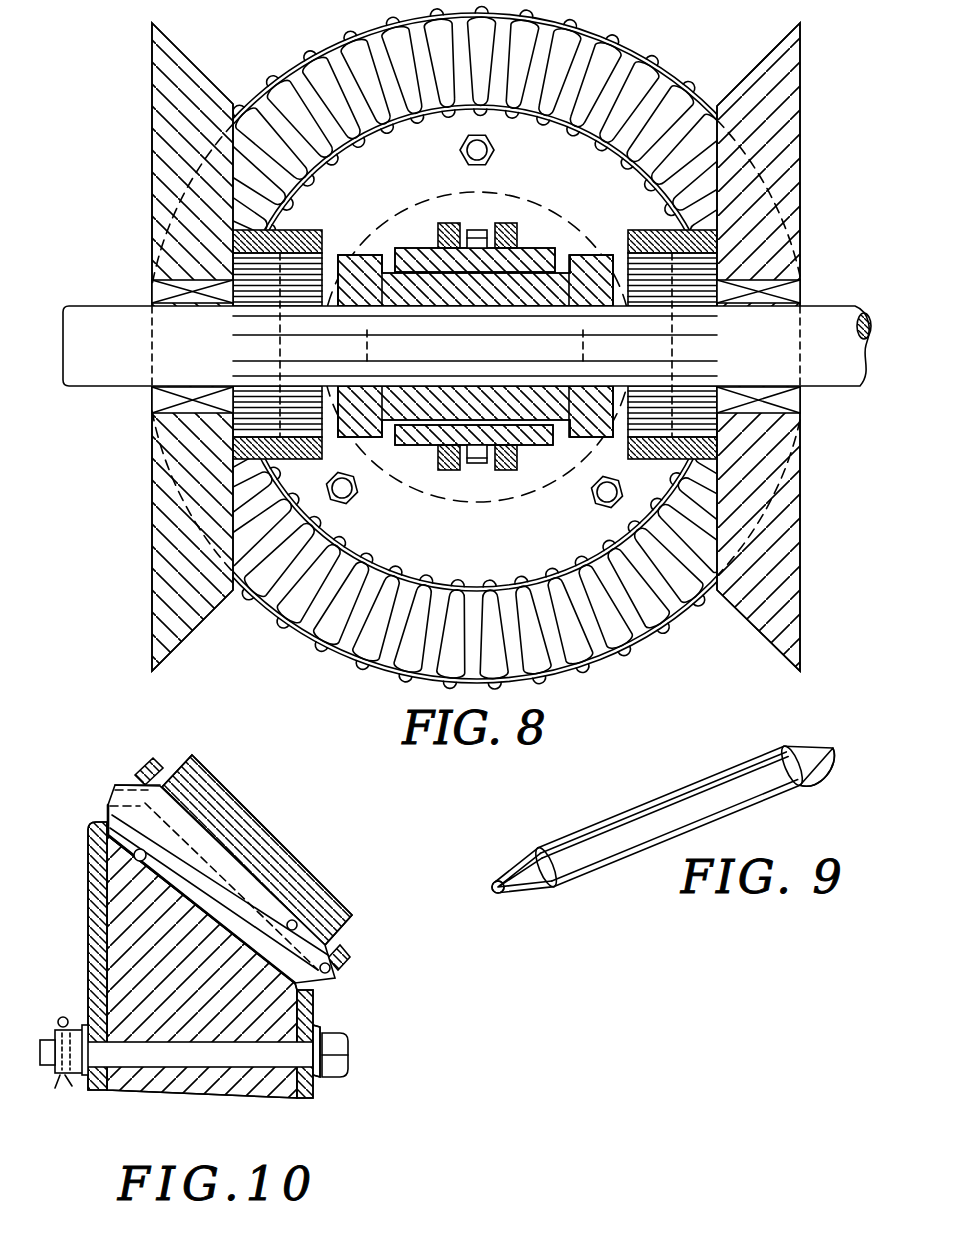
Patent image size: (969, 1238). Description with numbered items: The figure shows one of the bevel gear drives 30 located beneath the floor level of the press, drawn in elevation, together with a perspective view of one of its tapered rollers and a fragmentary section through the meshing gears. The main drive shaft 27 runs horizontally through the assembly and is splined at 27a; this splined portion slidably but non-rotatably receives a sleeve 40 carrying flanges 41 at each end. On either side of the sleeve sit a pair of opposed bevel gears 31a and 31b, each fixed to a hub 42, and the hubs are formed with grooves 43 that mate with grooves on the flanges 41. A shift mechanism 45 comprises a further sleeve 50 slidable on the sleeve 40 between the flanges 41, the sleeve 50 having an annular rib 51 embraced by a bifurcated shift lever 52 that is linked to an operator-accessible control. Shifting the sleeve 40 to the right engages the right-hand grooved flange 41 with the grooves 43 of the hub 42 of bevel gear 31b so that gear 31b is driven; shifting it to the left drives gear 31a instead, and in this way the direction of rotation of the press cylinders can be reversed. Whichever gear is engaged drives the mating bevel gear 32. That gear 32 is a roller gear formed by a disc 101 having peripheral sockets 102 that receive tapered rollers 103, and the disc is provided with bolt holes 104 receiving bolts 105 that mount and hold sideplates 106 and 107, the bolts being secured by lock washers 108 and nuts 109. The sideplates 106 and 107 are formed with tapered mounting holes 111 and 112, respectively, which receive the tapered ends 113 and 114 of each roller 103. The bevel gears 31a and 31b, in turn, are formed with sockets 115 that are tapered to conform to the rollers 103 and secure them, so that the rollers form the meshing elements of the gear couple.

In FIG. 8, the main drive shaft 27 is at (467, 336).
In FIG. 8, the splined portion of shaft 27a is at (263, 307).
In FIG. 8, the gear drive 30 is at (476, 369).
In FIG. 8, the bevel gear 31a is at (207, 628).
In FIG. 8, the bevel gear 31b is at (747, 637).
In FIG. 8, the mating bevel gear 32 is at (364, 673).
In FIG. 10, the mating bevel gear 32 is at (268, 1108).
In FIG. 8, the sleeve 40 is at (453, 354).
In FIG. 8, the flanges 41 is at (568, 253).
In FIG. 8, the hubs 42 is at (321, 257).
In FIG. 8, the grooves 43 is at (328, 298).
In FIG. 8, the shift mechanism 45 is at (453, 208).
In FIG. 8, the sleeve 50 is at (475, 358).
In FIG. 8, the annular rib 51 is at (472, 230).
In FIG. 8, the bifurcated shift lever 52 is at (505, 471).
In FIG. 10, the disc 101 is at (185, 1010).
In FIG. 10, the peripheral sockets 102 is at (136, 860).
In FIG. 8, the tapered rollers 103 is at (327, 90).
In FIG. 9, the tapered rollers 103 is at (627, 797).
In FIG. 10, the tapered rollers 103 is at (242, 888).
In FIG. 10, the bolt holes 104 is at (178, 1058).
In FIG. 8, the bolts 105 is at (352, 503).
In FIG. 10, the bolts 105 is at (338, 1048).
In FIG. 10, the sideplate 106 is at (318, 1010).
In FIG. 10, the sideplate 107 is at (88, 955).
In FIG. 10, the lock washers 108 is at (318, 1078).
In FIG. 10, the nuts 109 is at (72, 1040).
In FIG. 10, the tapered mounting holes 111 is at (330, 972).
In FIG. 10, the tapered mounting holes 112 is at (130, 783).
In FIG. 9, the tapered end 113 is at (535, 877).
In FIG. 9, the tapered end 114 is at (817, 760).
In FIG. 10, the sockets 115 is at (296, 921).